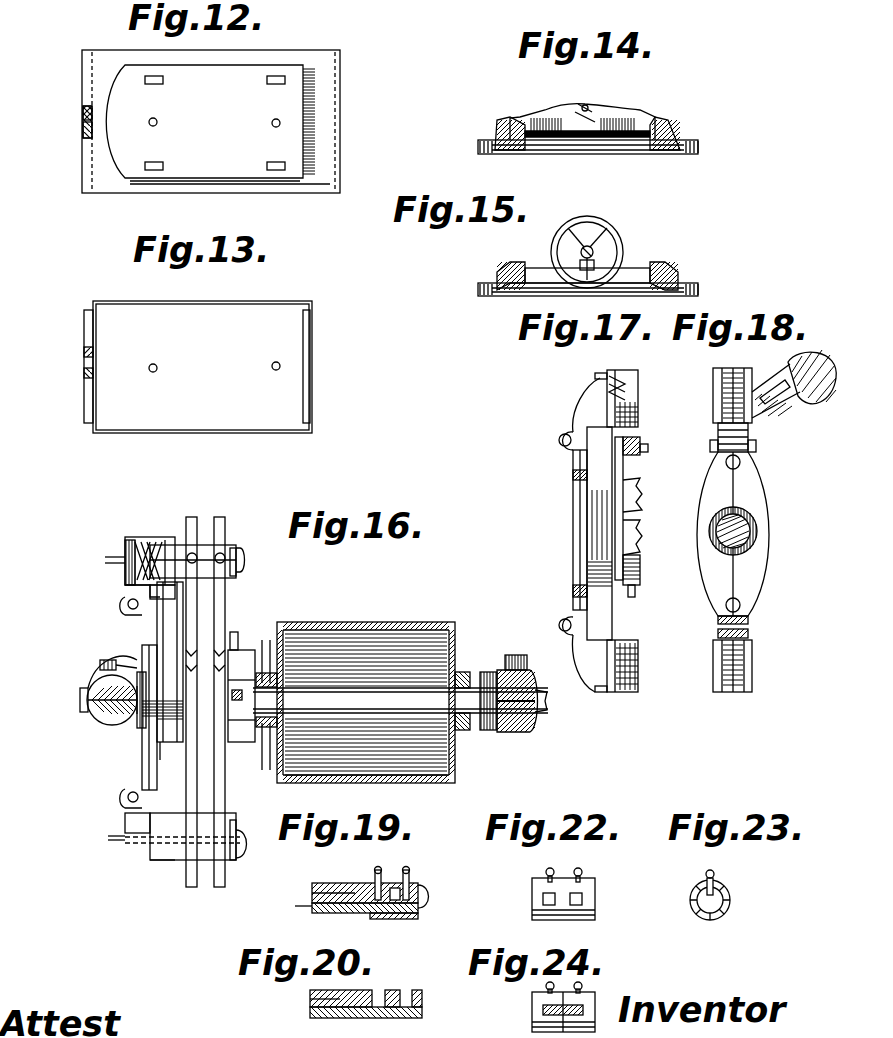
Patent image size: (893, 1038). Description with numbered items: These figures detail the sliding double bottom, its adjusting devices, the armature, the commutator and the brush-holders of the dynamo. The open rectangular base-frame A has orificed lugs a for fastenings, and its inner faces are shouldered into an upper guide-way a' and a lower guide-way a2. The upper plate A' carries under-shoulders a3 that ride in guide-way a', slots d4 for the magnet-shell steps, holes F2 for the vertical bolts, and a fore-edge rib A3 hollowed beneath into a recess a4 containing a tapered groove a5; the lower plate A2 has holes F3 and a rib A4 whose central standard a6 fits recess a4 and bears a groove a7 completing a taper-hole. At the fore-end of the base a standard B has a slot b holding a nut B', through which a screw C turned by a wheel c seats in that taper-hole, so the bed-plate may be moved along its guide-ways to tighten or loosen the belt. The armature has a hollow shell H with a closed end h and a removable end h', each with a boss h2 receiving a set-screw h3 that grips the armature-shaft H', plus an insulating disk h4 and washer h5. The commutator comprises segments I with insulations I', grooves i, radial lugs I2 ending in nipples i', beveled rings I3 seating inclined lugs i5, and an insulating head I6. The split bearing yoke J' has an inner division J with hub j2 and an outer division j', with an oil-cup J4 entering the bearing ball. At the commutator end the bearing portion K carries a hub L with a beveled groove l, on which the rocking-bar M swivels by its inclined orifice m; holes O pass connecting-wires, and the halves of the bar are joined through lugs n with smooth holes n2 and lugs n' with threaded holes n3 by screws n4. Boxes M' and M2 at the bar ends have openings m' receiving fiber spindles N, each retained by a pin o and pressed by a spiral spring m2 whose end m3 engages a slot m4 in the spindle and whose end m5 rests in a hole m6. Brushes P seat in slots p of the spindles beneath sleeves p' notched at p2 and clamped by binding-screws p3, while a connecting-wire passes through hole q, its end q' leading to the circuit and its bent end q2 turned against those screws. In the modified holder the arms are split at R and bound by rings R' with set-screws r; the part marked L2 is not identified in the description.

In FIG. 12, the under-shoulders a3 is at (283, 66).
In FIG. 12, the slots or holes d4 is at (265, 78).
In FIG. 12, the holes in upper plate F2 is at (214, 117).
In FIG. 12, the upper plate A' is at (66, 108).
In FIG. 14, the upper plate A' is at (646, 101).
In FIG. 12, the central groove or notch a5 is at (83, 121).
In FIG. 14, the central groove or notch a5 is at (585, 105).
In FIG. 12, the recess a4 is at (83, 128).
In FIG. 14, the recess a4 is at (598, 112).
In FIG. 13, the lower plate A2 is at (202, 367).
In FIG. 14, the lower plate A2 is at (578, 151).
In FIG. 13, the transverse raised rib or flange A4 is at (85, 335).
In FIG. 14, the transverse raised rib or flange A4 is at (661, 118).
In FIG. 13, the central groove or notch a7 is at (85, 365).
In FIG. 14, the central groove or notch a7 is at (600, 122).
In FIG. 13, the upright projection or standard a6 is at (85, 377).
In FIG. 14, the upright projection or standard a6 is at (568, 118).
In FIG. 13, the holes in lower plate F3 is at (149, 368).
In FIG. 14, the base-frame A is at (588, 157).
In FIG. 15, the base-frame A is at (590, 265).
In FIG. 14, the lugs a is at (591, 137).
In FIG. 15, the lugs a is at (591, 283).
In FIG. 14, the transverse raised rib or flange A3 is at (560, 117).
In FIG. 14, the upper guide-way a' is at (508, 116).
In FIG. 15, the upper guide-way a' is at (517, 256).
In FIG. 14, the manipulating wheel or handle c is at (590, 106).
In FIG. 15, the manipulating wheel or handle c is at (570, 225).
In FIG. 14, the lower guide-way a2 is at (528, 150).
In FIG. 15, the lower guide-way a2 is at (520, 285).
In FIG. 15, the screw C is at (594, 232).
In FIG. 15, the upright projection or standard B is at (610, 254).
In FIG. 15, the removable filling or nut B' is at (623, 240).
In FIG. 15, the open slot or recess b is at (590, 262).
In FIG. 16, the hollow shell or cylinder H is at (366, 688).
In FIG. 16, the closed end h is at (400, 645).
In FIG. 16, the removable end h' is at (467, 655).
In FIG. 16, the bosses h2 is at (274, 740).
In FIG. 16, the set-screws h3 is at (272, 672).
In FIG. 16, the insulating end-piece or disk h4 is at (283, 625).
In FIG. 16, the insulating-washer h5 is at (490, 732).
In FIG. 16, the inner division of yoke J is at (510, 690).
In FIG. 16, the oil-cup J4 is at (516, 651).
In FIG. 16, the outer division of yoke j' is at (547, 691).
In FIG. 16, the curved yoke or frame J' is at (524, 743).
In FIG. 16, the armature-shaft H' is at (559, 733).
In FIG. 17, the armature-shaft H' is at (654, 566).
In FIG. 18, the armature-shaft H' is at (754, 534).
In FIG. 16, the central hub or annular flange j2 is at (515, 733).
In FIG. 16, the brushes P is at (205, 702).
In FIG. 17, the brushes P is at (624, 479).
In FIG. 19, the brushes P is at (420, 905).
In FIG. 24, the brushes P is at (545, 1012).
In FIG. 16, the cylinder or sleeve p' is at (220, 692).
In FIG. 19, the cylinder or sleeve p' is at (394, 927).
In FIG. 22, the cylinder or sleeve p' is at (563, 910).
In FIG. 23, the cylinder or sleeve p' is at (710, 911).
In FIG. 24, the cylinder or sleeve p' is at (547, 1009).
In FIG. 16, the combined binding and set screws p3 is at (235, 548).
In FIG. 19, the combined binding and set screws p3 is at (382, 868).
In FIG. 22, the combined binding and set screws p3 is at (556, 868).
In FIG. 23, the combined binding and set screws p3 is at (715, 878).
In FIG. 24, the combined binding and set screws p3 is at (583, 985).
In FIG. 16, the fiber-spindles N is at (190, 546).
In FIG. 17, the fiber-spindles N is at (632, 409).
In FIG. 19, the fiber-spindles N is at (365, 883).
In FIG. 20, the fiber-spindles N is at (341, 987).
In FIG. 16, the bent end of connecting-wire q2 is at (248, 709).
In FIG. 19, the bent end of connecting-wire q2 is at (428, 888).
In FIG. 16, the cylindrical box M' is at (146, 554).
In FIG. 17, the cylindrical box M' is at (637, 397).
In FIG. 18, the cylindrical box M' is at (763, 383).
In FIG. 16, the spiral-spring m2 is at (150, 540).
In FIG. 17, the spiral-spring m2 is at (608, 386).
In FIG. 16, the outer end of spring m5 is at (168, 540).
In FIG. 17, the outer end of spring m5 is at (618, 374).
In FIG. 16, the inner end of spring m3 is at (128, 546).
In FIG. 16, the open transverse slot or cut m4 is at (105, 559).
In FIG. 19, the open transverse slot or cut m4 is at (312, 890).
In FIG. 20, the open transverse slot or cut m4 is at (312, 1000).
In FIG. 16, the outer end of connecting-wire q' is at (98, 708).
In FIG. 19, the outer end of connecting-wire q' is at (297, 913).
In FIG. 16, the threaded orifices or holes n3 is at (133, 604).
In FIG. 17, the threaded orifices or holes n3 is at (598, 627).
In FIG. 18, the threaded orifices or holes n3 is at (748, 629).
In FIG. 16, the lugs or offsets n' is at (125, 701).
In FIG. 17, the lugs or offsets n' is at (554, 528).
In FIG. 18, the lugs or offsets n' is at (766, 604).
In FIG. 16, the pin o is at (112, 897).
In FIG. 17, the pin o is at (582, 535).
In FIG. 18, the pin o is at (732, 533).
In FIG. 19, the pin o is at (350, 898).
In FIG. 20, the pin o is at (355, 1000).
In FIG. 16, the side openings or orifices m' is at (139, 709).
In FIG. 16, the rocking bar or yoke M is at (162, 686).
In FIG. 17, the rocking bar or yoke M is at (583, 535).
In FIG. 16, the central inclined orifice m is at (105, 655).
In FIG. 17, the central inclined orifice m is at (567, 549).
In FIG. 16, the circular hub or flange L is at (130, 668).
In FIG. 16, the clip L2 is at (100, 665).
In FIG. 16, the longitudinal portion of bearing-frame K is at (100, 720).
In FIG. 16, the insulating head or washer I6 is at (140, 730).
In FIG. 17, the insulating head or washer I6 is at (592, 574).
In FIG. 18, the insulating head or washer I6 is at (750, 542).
In FIG. 16, the inclined or beveled groove l is at (135, 710).
In FIG. 16, the holes O is at (99, 775).
In FIG. 16, the lugs or shanks I2 is at (248, 650).
In FIG. 16, the tapered extension or nipple i' is at (234, 614).
In FIG. 16, the commutator segment I is at (201, 683).
In FIG. 17, the commutator segment I is at (651, 530).
In FIG. 16, the intermediate insulations I' is at (204, 768).
In FIG. 17, the intermediate insulations I' is at (648, 538).
In FIG. 16, the beveled rings I3 is at (248, 742).
In FIG. 17, the beveled rings I3 is at (603, 505).
In FIG. 16, the inclined lugs or projections i5 is at (255, 780).
In FIG. 16, the cylindrical box M2 is at (133, 871).
In FIG. 17, the cylindrical box M2 is at (628, 684).
In FIG. 18, the cylindrical box M2 is at (752, 684).
In FIG. 16, the slots or holes m6 is at (165, 862).
In FIG. 17, the slots or holes m6 is at (600, 373).
In FIG. 17, the bifurcated or split ends R is at (652, 441).
In FIG. 17, the smooth holes or orifices n2 is at (698, 437).
In FIG. 17, the set-screws r is at (649, 449).
In FIG. 17, the rings or bands R' is at (664, 463).
In FIG. 18, the rings or bands R' is at (750, 453).
In FIG. 17, the V-shaped circumferential grooves i is at (637, 600).
In FIG. 18, the screws n4 is at (718, 437).
In FIG. 18, the lugs or offsets n is at (702, 604).
In FIG. 19, the hole q is at (365, 921).
In FIG. 20, the hole q is at (377, 1020).
In FIG. 19, the notches or open slots p2 is at (412, 893).
In FIG. 22, the notches or open slots p2 is at (543, 899).
In FIG. 23, the notches or open slots p2 is at (731, 900).
In FIG. 20, the transverse open slots or recesses p is at (403, 981).